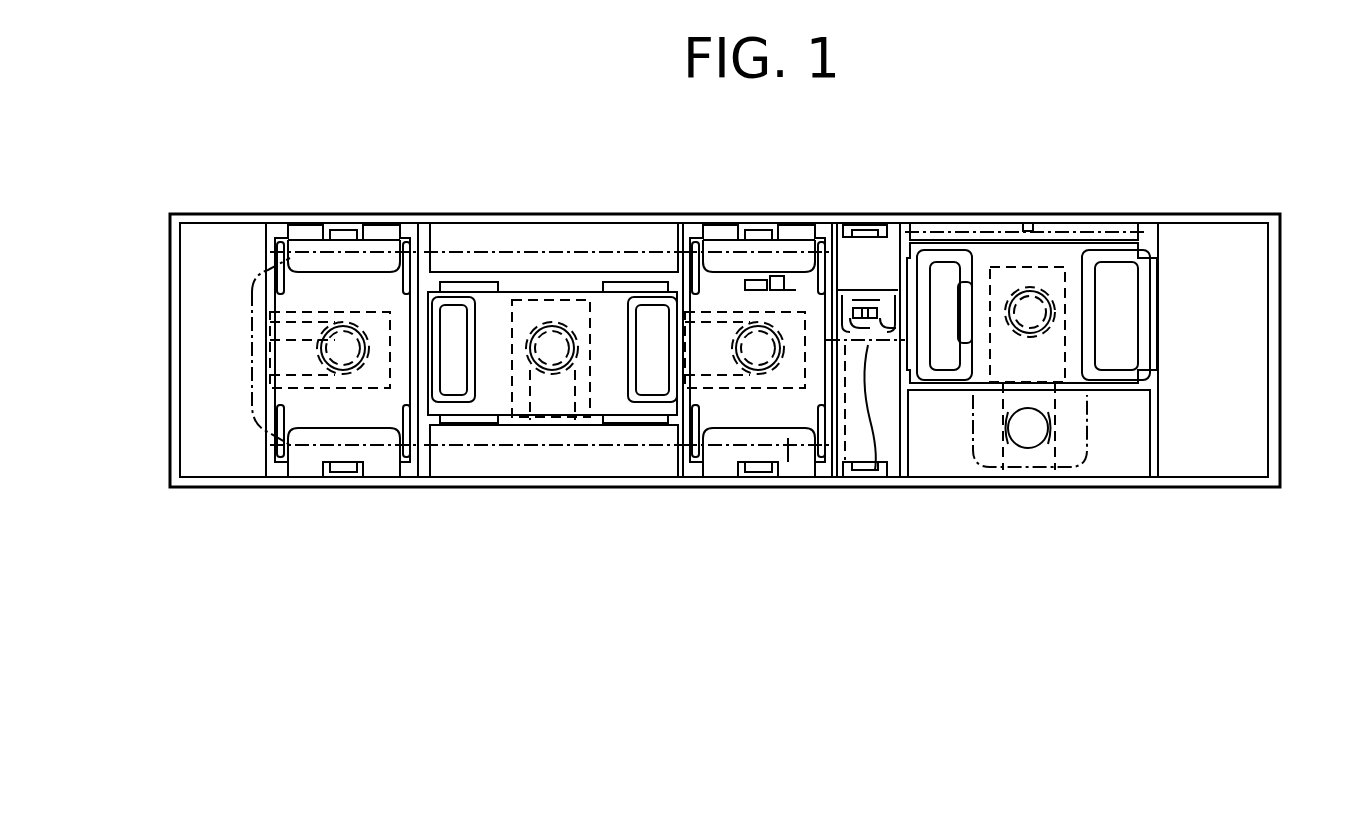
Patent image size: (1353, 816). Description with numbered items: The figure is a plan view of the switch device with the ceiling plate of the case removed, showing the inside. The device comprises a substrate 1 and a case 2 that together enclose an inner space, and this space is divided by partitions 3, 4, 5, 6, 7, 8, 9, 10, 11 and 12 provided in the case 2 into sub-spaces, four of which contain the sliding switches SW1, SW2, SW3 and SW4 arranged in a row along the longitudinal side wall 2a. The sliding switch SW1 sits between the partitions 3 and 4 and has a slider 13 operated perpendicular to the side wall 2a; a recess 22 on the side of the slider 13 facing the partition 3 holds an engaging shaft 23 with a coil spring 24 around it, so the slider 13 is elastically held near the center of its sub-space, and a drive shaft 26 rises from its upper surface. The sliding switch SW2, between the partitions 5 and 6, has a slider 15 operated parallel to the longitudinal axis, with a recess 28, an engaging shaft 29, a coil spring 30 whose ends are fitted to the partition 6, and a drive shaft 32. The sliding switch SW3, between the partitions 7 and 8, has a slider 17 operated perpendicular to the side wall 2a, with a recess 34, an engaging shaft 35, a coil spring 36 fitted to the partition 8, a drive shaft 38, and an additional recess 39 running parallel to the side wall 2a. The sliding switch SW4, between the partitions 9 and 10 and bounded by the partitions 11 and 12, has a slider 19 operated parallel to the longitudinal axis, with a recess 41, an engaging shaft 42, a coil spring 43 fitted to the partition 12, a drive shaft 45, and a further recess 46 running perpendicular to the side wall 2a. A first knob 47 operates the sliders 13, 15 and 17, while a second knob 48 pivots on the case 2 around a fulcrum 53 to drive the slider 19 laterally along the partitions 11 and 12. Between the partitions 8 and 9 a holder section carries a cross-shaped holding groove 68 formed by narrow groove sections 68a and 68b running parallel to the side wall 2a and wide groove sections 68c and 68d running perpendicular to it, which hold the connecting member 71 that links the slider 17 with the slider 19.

The substrate 1 is at (192, 235).
The case 2 is at (222, 220).
The longitudinal side wall 2a is at (682, 262).
The partition 3 is at (268, 322).
The partition 4 is at (412, 232).
The partition 5 is at (522, 292).
The partition 6 is at (500, 425).
The partition 7 is at (653, 268).
The partition 8 is at (855, 298).
The partition 9 is at (915, 282).
The partition 10 is at (1168, 258).
The partition 11 is at (956, 248).
The partition 12 is at (1165, 430).
The slider 13 is at (374, 232).
The slider 15 is at (574, 300).
The slider 17 is at (766, 280).
The slider 19 is at (1040, 302).
The recess 22 is at (318, 250).
The engaging shaft 23 is at (335, 322).
The coil spring 24 is at (270, 345).
The drive shaft 26 is at (372, 380).
The recess 28 is at (482, 300).
The engaging shaft 29 is at (552, 375).
The coil spring 30 is at (578, 405).
The drive shaft 32 is at (552, 325).
The recess 34 is at (712, 290).
The engaging shaft 35 is at (742, 380).
The coil spring 36 is at (770, 402).
The drive shaft 38 is at (800, 286).
The recess 39 is at (744, 262).
The recess 41 is at (1000, 432).
The engaging shaft 42 is at (1032, 300).
The coil spring 43 is at (1100, 395).
The drive shaft 45 is at (1112, 252).
The recess 46 is at (966, 345).
The first knob 47 is at (255, 405).
The second knob 48 is at (1030, 400).
The fulcrum 53 is at (1040, 436).
The cross-shaped holding groove 68 is at (868, 335).
The narrow groove section 68a is at (845, 420).
The narrow groove section 68b is at (888, 300).
The wide groove section 68c is at (866, 300).
The wide groove section 68d is at (882, 400).
The connecting member 71 is at (906, 400).
The sliding switch SW1 is at (326, 478).
The sliding switch SW2 is at (622, 420).
The sliding switch SW3 is at (735, 420).
The sliding switch SW4 is at (1105, 318).